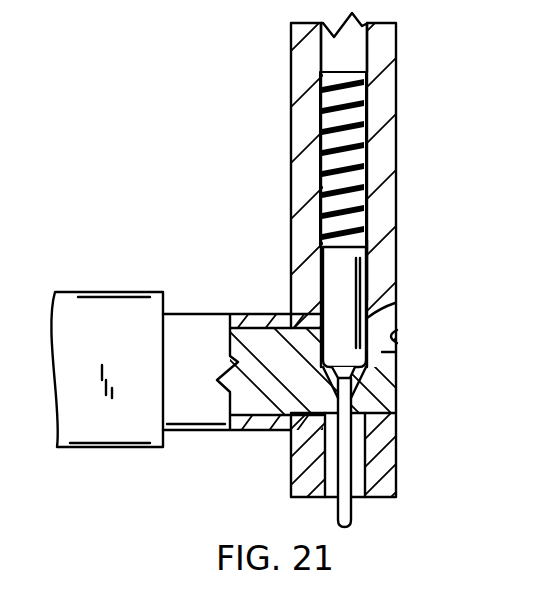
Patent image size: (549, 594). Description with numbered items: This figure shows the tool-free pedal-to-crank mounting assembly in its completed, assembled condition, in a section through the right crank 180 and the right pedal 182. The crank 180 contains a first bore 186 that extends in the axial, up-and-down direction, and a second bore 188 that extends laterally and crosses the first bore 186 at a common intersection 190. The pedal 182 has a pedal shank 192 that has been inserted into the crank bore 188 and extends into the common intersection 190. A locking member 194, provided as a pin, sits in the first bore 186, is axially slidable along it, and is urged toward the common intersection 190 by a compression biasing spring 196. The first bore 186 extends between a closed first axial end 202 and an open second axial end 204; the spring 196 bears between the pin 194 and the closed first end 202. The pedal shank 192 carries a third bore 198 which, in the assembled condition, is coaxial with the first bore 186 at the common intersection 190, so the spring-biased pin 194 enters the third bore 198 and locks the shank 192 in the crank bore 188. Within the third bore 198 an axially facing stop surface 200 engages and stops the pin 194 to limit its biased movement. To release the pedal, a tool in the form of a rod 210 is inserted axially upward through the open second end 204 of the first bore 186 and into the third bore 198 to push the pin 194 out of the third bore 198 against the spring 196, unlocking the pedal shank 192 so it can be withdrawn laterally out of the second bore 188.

The right crank 180 is at (385, 72).
The right pedal 182 is at (115, 297).
The first bore 186 is at (332, 285).
The second bore 188 is at (397, 340).
The common intersection 190 is at (360, 412).
The pedal shank 192 is at (273, 400).
The locking member 194 is at (385, 235).
The compression biasing spring 196 is at (380, 133).
The third bore 198 is at (367, 318).
The axially facing stop surface 200 is at (382, 352).
The first axial end 202 is at (335, 72).
The second axial end 204 is at (337, 497).
The rod 210 is at (390, 453).